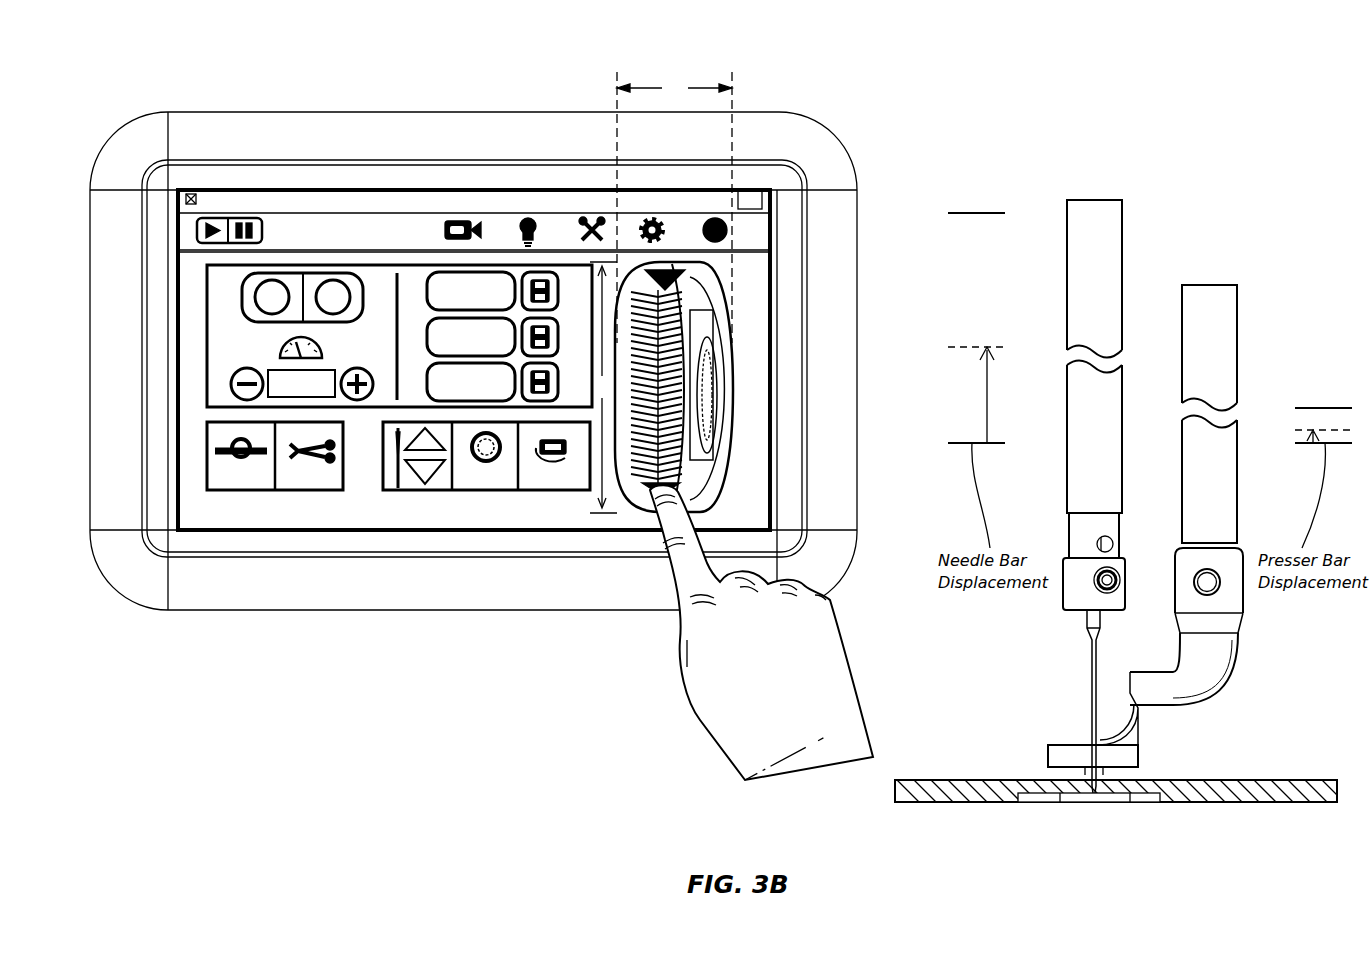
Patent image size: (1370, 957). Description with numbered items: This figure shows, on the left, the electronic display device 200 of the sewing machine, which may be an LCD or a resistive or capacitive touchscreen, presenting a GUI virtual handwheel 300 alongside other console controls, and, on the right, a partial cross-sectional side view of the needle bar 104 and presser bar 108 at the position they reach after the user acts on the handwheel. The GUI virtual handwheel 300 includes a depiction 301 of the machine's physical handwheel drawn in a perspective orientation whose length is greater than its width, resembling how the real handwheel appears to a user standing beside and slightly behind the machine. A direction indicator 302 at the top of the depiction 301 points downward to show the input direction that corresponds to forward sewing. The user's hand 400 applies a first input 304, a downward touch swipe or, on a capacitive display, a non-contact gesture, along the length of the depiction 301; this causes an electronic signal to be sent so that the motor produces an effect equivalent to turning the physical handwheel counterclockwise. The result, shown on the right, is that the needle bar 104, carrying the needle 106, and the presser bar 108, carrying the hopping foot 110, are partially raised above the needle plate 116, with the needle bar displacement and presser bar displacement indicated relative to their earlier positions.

The electronic display device 200 is at (221, 116).
The GUI virtual handwheel 300 is at (738, 273).
The depiction 301 is at (628, 502).
The direction indicator 302 is at (643, 270).
The first input 304 is at (672, 385).
The user's hand 400 is at (795, 582).
The needle bar 104 is at (1110, 306).
The needle 106 is at (1090, 690).
The presser bar 108 is at (1193, 338).
The hopping foot 110 is at (1050, 753).
The needle plate 116 is at (947, 780).